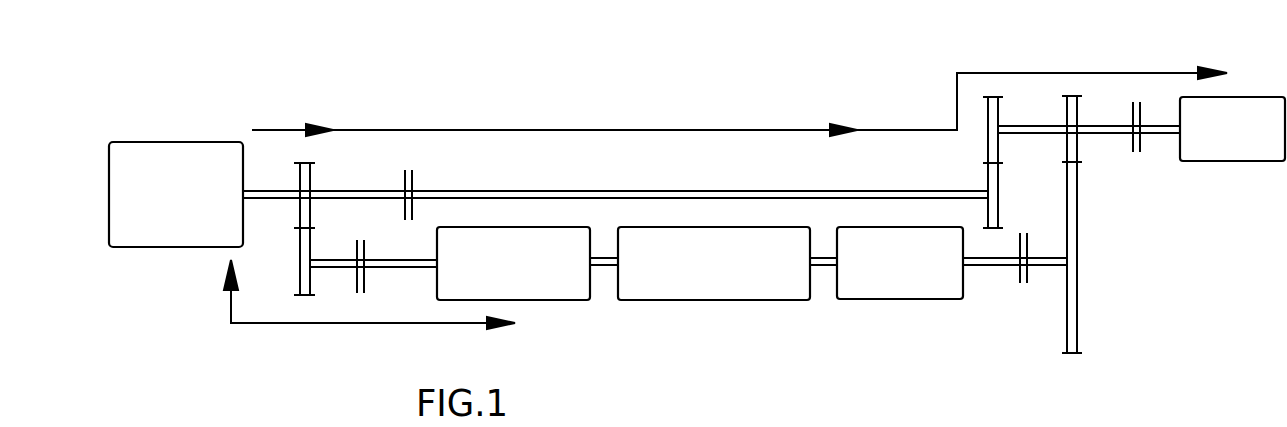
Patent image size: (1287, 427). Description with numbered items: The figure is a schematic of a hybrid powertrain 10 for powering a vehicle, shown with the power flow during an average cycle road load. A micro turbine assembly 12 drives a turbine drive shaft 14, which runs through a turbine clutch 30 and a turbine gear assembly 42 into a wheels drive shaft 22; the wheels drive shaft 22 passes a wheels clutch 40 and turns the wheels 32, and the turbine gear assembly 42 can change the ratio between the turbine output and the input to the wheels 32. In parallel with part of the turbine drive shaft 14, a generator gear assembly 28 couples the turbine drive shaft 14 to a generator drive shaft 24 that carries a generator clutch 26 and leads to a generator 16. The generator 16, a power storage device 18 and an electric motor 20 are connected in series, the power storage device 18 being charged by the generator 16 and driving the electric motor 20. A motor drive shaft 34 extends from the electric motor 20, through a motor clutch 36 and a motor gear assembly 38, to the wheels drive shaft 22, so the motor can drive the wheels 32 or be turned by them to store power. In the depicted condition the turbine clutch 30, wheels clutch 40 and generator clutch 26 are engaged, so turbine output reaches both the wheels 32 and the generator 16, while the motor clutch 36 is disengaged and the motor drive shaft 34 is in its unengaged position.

The hybrid powertrain 10 is at (672, 106).
The micro turbine assembly 12 is at (172, 141).
The turbine drive shaft 14 is at (357, 190).
The generator 16 is at (570, 302).
The power storage device 18 is at (720, 302).
The electric motor 20 is at (895, 301).
The wheels drive shaft 22 is at (1100, 123).
The generator drive shaft 24 is at (340, 268).
The generator clutch 26 is at (367, 280).
The generator gear assembly 28 is at (294, 230).
The turbine clutch 30 is at (414, 182).
The wheels 32 is at (1258, 163).
The motor drive shaft 34 is at (978, 267).
The motor clutch 36 is at (1015, 284).
The motor gear assembly 38 is at (1083, 160).
The wheels clutch 40 is at (1143, 110).
The turbine gear assembly 42 is at (983, 160).